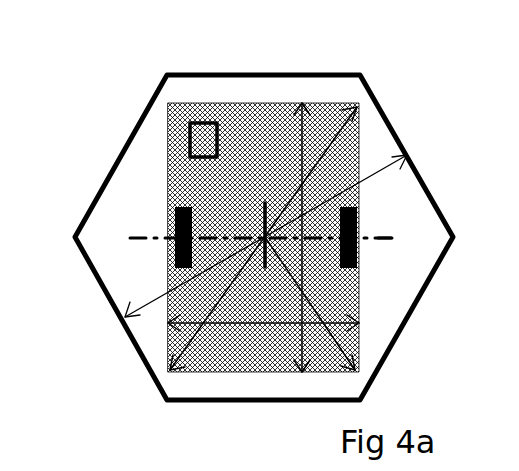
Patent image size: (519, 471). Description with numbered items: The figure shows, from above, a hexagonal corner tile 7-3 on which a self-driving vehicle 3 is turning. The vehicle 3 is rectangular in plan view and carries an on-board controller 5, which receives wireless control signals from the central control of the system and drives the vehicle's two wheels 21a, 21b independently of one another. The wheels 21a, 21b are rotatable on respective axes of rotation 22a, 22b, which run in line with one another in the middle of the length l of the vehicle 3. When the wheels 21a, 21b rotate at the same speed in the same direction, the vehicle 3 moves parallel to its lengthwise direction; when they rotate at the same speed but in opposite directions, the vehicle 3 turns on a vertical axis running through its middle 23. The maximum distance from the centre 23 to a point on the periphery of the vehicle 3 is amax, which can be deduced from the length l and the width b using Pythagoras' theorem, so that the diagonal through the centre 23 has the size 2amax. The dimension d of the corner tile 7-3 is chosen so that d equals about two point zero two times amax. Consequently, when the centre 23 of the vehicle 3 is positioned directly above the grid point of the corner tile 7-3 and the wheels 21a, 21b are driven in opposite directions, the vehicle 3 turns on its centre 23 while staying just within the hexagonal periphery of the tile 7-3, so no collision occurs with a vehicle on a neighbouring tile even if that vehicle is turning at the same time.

The corner tile 7-3 is at (147, 150).
The self-driving vehicle 3 is at (247, 128).
The on-board controller 5 is at (205, 135).
The length of the vehicle l is at (302, 147).
The diagonal of the vehicle 2amax is at (193, 348).
The width of the vehicle b is at (240, 332).
The maximum distance between centre and periphery amax is at (320, 305).
The tile dimension d is at (157, 298).
The first axis of rotation 22a is at (133, 234).
The second axis of rotation 22b is at (386, 246).
The middle of the vehicle 23 is at (256, 231).
The first wheel 21a is at (182, 218).
The second wheel 21b is at (353, 216).